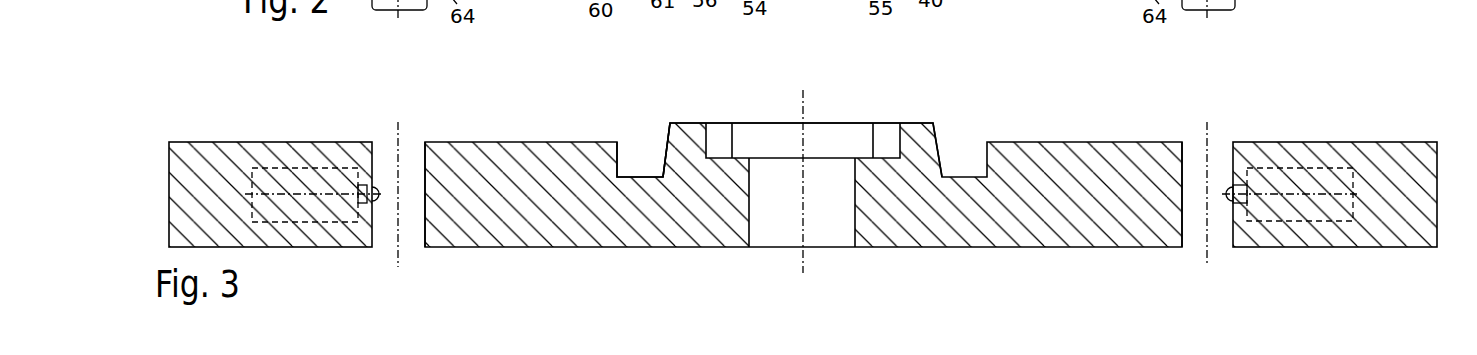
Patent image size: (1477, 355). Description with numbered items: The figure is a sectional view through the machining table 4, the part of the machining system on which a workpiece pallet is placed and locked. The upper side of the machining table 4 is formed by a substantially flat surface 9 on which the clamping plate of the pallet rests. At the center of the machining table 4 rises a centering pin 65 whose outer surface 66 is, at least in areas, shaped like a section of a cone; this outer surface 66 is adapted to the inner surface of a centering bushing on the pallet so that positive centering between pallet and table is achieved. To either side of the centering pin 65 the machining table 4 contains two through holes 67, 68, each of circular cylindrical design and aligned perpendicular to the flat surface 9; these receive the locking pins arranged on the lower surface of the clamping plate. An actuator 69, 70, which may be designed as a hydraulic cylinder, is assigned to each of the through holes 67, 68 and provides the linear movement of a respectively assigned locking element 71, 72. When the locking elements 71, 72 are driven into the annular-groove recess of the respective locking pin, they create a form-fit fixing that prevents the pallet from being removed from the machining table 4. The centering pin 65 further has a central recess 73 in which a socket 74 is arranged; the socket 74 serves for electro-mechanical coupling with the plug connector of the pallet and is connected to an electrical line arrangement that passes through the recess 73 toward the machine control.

The machining table 4 is at (1334, 101).
The flat surface 9 is at (200, 140).
The centering pin 65 is at (917, 120).
The outer surface 66 is at (665, 158).
The through hole 67 is at (427, 177).
The through hole 68 is at (1180, 173).
The actuator 69 is at (281, 180).
The actuator 70 is at (1276, 181).
The locking element 71 is at (367, 185).
The locking element 72 is at (1240, 185).
The central recess 73 is at (854, 207).
The socket 74 is at (840, 135).